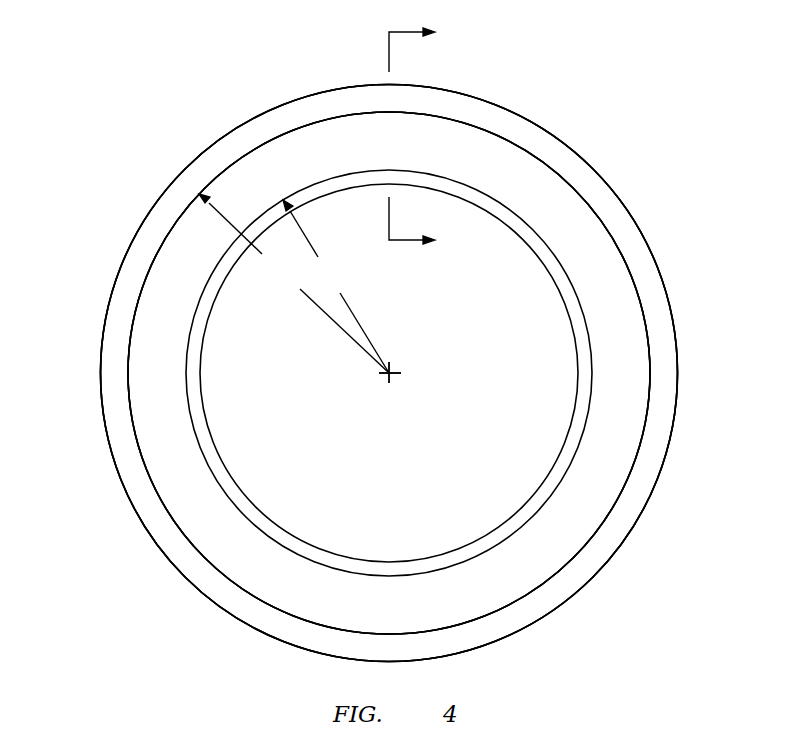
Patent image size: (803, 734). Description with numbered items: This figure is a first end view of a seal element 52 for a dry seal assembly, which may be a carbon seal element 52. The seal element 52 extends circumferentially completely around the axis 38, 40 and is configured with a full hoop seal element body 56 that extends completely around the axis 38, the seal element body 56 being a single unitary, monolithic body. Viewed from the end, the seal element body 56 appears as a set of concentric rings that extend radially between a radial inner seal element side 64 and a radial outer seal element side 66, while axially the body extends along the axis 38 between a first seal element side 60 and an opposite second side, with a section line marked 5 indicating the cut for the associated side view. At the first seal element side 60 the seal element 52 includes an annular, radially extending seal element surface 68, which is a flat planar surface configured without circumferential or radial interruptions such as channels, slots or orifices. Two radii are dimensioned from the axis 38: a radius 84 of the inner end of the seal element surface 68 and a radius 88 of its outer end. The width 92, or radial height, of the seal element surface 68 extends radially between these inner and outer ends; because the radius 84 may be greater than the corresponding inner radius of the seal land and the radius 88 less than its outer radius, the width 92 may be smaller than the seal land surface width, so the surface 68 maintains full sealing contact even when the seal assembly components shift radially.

The seal element 52 is at (640, 110).
The seal element body 56 is at (619, 193).
The radial outer seal element side 66 is at (107, 438).
The axial first seal element side 60 is at (617, 303).
The seal element surface 68 is at (389, 373).
The width of the seal element surface 92 is at (245, 307).
The radial inner seal element side 64 is at (205, 414).
The radius of outer end of seal element surface 88 is at (294, 283).
The radius of inner end of seal element surface 84 is at (336, 286).
The axis 38 is at (391, 376).
The axis of rotation 40 is at (390, 372).
The section line 5- 5 is at (423, 139).